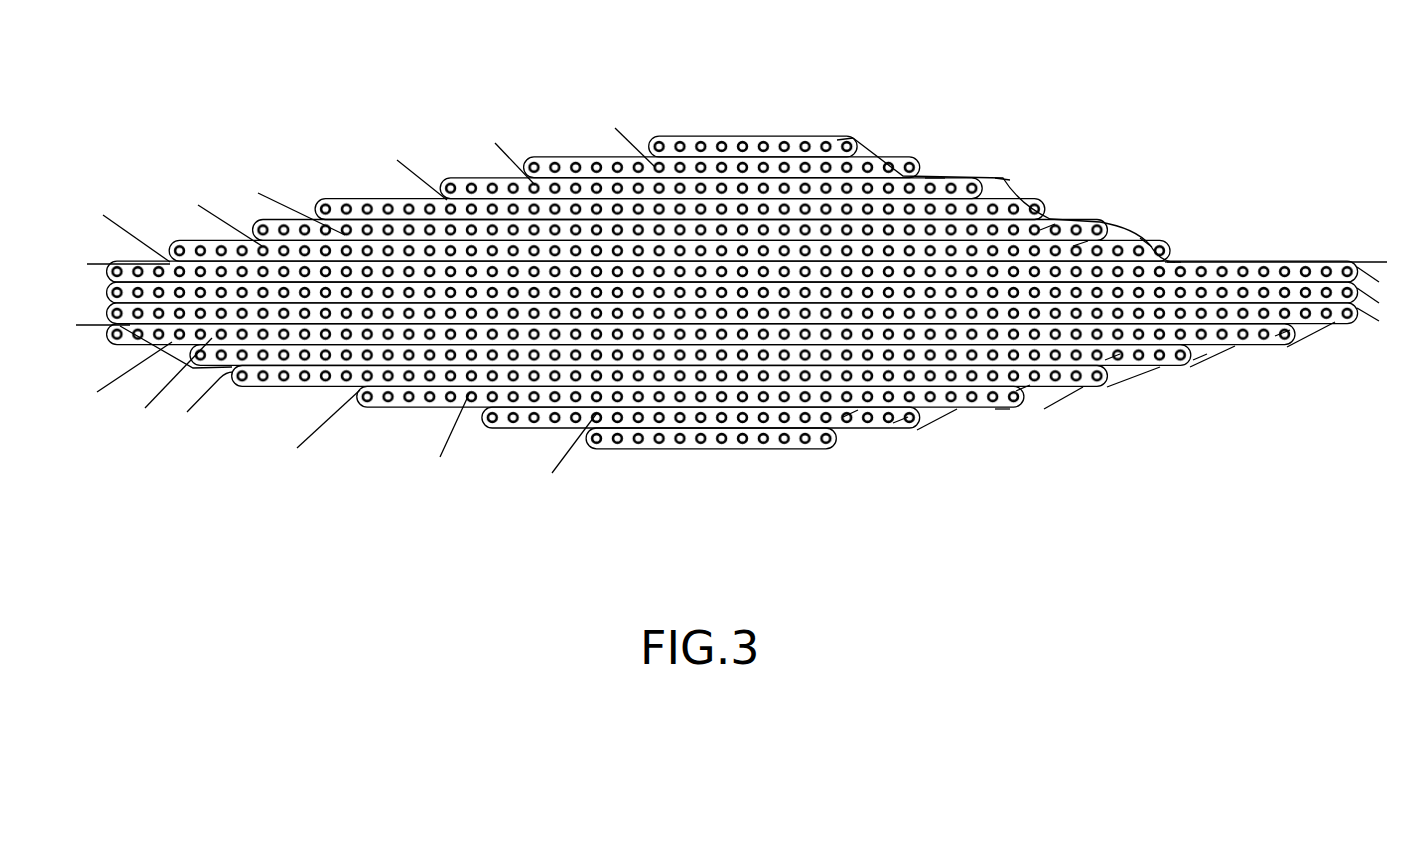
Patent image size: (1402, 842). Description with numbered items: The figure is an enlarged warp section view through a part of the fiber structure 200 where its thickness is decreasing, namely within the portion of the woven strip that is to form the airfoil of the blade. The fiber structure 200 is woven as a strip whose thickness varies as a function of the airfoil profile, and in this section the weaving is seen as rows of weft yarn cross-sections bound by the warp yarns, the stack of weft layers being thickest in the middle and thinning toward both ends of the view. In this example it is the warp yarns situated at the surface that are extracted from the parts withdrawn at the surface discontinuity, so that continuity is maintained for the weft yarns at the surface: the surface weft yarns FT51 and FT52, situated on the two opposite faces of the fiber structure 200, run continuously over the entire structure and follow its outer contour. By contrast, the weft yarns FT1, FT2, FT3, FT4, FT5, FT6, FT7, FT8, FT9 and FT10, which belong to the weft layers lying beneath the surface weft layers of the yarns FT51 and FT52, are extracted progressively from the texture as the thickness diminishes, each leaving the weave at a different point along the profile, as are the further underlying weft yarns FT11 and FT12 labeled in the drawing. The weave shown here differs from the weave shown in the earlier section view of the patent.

The fiber structure 200 is at (484, 88).
The weft yarn FT1 is at (837, 140).
The weft yarn FT2 is at (933, 178).
The weft yarn FT3 is at (1003, 180).
The weft yarn FT4 is at (1047, 227).
The weft yarn FT5 is at (1080, 243).
The surface weft yarn FT51 is at (1162, 226).
The surface weft yarn FT52 is at (1003, 410).
The weft yarn FT6 is at (1173, 263).
The weft yarn FT7 is at (1282, 333).
The weft yarn FT8 is at (1200, 357).
The weft yarn FT9 is at (1112, 357).
The weft yarn FT10 is at (1023, 388).
The weft yarn FT11 is at (900, 420).
The weft yarn FT12 is at (850, 413).